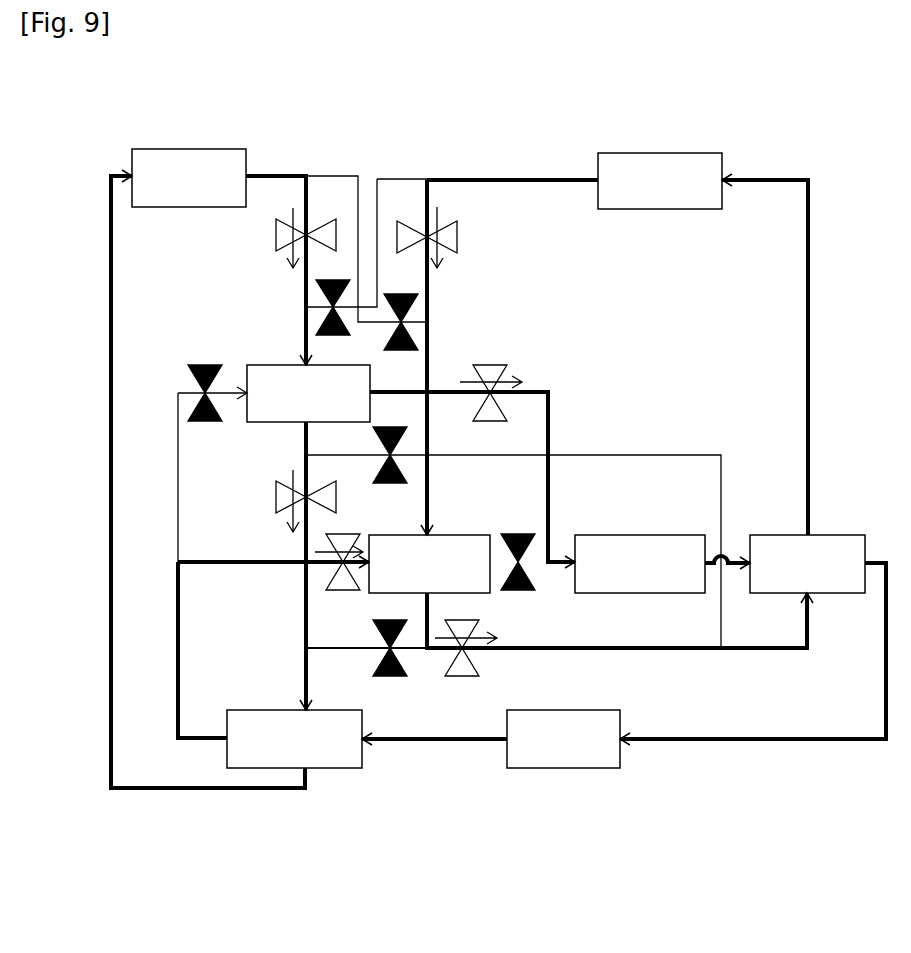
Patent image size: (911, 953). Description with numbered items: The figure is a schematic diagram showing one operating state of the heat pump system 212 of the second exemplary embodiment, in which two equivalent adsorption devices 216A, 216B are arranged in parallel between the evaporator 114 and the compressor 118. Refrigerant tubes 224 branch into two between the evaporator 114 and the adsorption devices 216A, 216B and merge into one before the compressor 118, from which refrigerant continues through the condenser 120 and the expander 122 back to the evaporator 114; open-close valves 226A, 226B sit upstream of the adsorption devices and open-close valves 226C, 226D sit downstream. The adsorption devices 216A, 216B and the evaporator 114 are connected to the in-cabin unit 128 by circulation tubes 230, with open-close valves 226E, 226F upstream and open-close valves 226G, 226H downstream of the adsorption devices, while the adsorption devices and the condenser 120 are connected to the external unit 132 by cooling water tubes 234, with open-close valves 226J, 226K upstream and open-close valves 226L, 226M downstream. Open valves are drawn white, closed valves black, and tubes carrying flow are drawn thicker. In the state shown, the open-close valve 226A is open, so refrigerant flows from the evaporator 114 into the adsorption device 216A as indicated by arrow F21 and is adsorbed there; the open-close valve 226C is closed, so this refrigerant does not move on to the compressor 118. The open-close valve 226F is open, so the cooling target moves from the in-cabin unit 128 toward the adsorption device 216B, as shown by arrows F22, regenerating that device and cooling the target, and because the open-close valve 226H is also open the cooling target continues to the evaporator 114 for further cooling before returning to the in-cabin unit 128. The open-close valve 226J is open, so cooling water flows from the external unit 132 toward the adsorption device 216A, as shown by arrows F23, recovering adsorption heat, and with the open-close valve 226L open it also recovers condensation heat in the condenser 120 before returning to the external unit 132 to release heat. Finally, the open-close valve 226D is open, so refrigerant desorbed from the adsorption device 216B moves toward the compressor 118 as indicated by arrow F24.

The in-cabin unit 128 is at (195, 149).
The external unit 132 is at (663, 153).
The cooling water tubes 234 is at (510, 180).
The circulation tubes 230 is at (111, 483).
The refrigerant tubes 224 is at (778, 741).
The heat pump system 212 is at (745, 852).
The adsorption device 216A is at (445, 535).
The adsorption device 216B is at (273, 363).
The compressor 118 is at (645, 593).
The condenser 120 is at (831, 593).
The evaporator 114 is at (334, 768).
The expander 122 is at (565, 768).
The open-close valve 226A is at (338, 592).
The open-close valve 226B is at (210, 422).
The open-close valve 226C is at (515, 591).
The open-close valve 226D is at (493, 364).
The open-close valve 226E is at (422, 307).
The open-close valve 226F is at (275, 235).
The open-close valve 226G is at (394, 678).
The open-close valve 226H is at (276, 497).
The open-close valve 226J is at (458, 237).
The open-close valve 226K is at (316, 294).
The open-close valve 226L is at (455, 678).
The open-close valve 226M is at (390, 485).
The arrow F21 is at (315, 548).
The arrows F22 is at (290, 262).
The arrows F23 is at (437, 212).
The arrow F24 is at (461, 382).